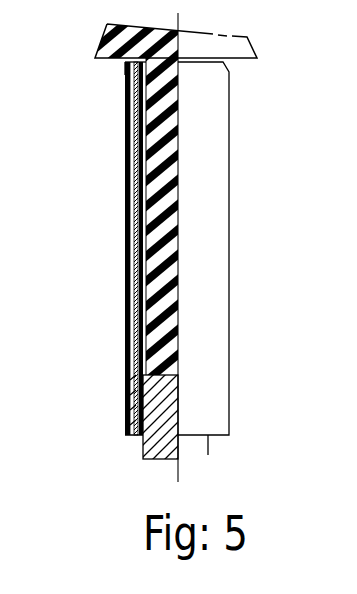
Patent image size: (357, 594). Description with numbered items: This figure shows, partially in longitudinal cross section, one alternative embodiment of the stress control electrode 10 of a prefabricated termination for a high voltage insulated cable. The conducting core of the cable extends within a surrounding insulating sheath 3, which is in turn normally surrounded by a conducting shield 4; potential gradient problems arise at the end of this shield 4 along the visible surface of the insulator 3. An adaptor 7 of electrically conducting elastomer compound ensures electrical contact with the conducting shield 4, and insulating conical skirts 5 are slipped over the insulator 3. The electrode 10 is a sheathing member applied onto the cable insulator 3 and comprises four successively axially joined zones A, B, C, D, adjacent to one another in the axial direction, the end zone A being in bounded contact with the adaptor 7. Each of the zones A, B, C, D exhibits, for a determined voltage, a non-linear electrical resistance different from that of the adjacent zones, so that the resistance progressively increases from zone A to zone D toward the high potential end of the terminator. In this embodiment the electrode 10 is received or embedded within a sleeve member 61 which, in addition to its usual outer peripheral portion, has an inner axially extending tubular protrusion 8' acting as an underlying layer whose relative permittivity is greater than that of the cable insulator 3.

The insulating sheath 3 is at (140, 63).
The zone D is at (130, 115).
The zone C is at (128, 167).
The zone B is at (128, 223).
The zone A is at (137, 291).
The adaptor 7 is at (125, 353).
The sleeve member 61 is at (123, 403).
The insulating conical skirts 5 is at (237, 48).
The inner axially extending tubular protrusion 8' is at (210, 129).
The stress control electrode 10 is at (153, 257).
The conducting shield 4 is at (199, 452).